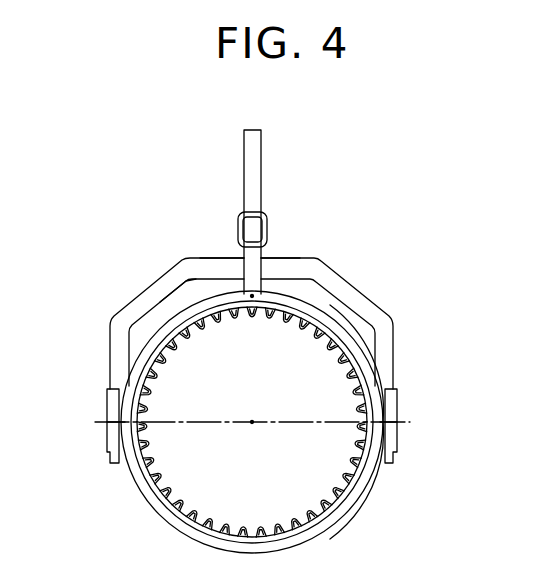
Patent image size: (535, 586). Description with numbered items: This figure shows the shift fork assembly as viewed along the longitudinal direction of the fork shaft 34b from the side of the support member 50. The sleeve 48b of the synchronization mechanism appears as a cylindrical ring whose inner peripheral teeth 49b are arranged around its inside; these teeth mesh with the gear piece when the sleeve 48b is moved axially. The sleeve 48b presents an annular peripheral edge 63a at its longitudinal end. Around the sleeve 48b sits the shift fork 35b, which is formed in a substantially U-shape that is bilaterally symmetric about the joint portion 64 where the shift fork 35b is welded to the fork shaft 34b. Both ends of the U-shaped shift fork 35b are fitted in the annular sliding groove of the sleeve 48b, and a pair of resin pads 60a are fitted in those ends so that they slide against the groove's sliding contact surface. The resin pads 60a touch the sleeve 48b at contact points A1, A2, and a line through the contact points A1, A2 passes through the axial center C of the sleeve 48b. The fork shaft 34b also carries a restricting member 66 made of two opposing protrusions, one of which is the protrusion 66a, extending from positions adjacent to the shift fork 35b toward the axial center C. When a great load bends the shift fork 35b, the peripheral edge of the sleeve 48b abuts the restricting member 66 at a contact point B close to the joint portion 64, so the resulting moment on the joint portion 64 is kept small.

The fork shaft 34b is at (279, 180).
The shift fork 35b is at (373, 284).
The sleeve 48b is at (138, 523).
The inner peripheral teeth 49b is at (245, 531).
The support member 50 is at (252, 232).
The resin pads 60a is at (110, 410).
The peripheral edge 63a is at (362, 493).
The joint portion 64 is at (272, 257).
The restricting member 66 is at (272, 283).
The protrusion 66a is at (182, 283).
The contact point A1 is at (108, 426).
The contact point A2 is at (394, 428).
The contact point B is at (251, 298).
The axial center C is at (252, 423).